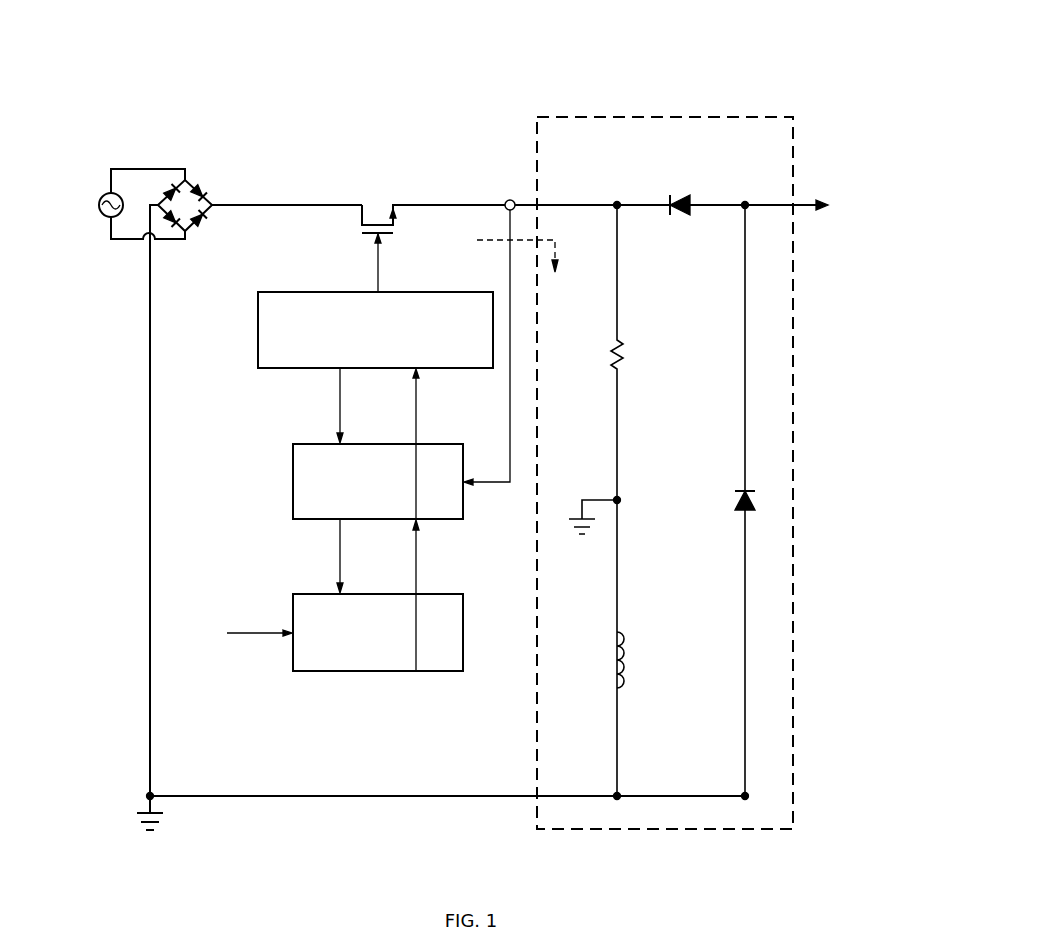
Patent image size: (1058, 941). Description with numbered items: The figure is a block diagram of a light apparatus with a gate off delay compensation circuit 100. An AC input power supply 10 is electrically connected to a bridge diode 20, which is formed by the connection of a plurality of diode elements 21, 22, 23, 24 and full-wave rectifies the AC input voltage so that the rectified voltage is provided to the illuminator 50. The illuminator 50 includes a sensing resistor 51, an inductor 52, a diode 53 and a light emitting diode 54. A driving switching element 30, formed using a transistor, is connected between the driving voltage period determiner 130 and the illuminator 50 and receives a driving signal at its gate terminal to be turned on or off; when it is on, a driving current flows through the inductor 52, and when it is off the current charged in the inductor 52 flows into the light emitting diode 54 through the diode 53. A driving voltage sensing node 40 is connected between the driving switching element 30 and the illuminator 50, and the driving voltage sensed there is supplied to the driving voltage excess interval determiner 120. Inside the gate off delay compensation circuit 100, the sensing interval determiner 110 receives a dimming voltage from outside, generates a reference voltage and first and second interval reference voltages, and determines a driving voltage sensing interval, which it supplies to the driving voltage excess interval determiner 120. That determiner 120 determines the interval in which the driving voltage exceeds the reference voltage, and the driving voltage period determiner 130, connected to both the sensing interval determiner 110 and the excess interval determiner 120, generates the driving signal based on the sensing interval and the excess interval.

The gate off delay compensation circuit 100 is at (494, 28).
The AC input power supply 10 is at (103, 218).
The bridge diode 20 is at (208, 98).
The diode element 21 is at (164, 186).
The diode element 22 is at (206, 186).
The diode element 23 is at (163, 230).
The diode element 24 is at (207, 230).
The driving switching element 30 is at (378, 174).
The driving voltage sensing node 40 is at (510, 199).
The illuminator 50 is at (663, 117).
The sensing resistor 51 is at (605, 350).
The inductor 52 is at (605, 656).
The diode 53 is at (732, 500).
The LED 54 is at (681, 197).
The sensing interval determiner 110 is at (464, 631).
The driving voltage excess interval determiner 120 is at (292, 478).
The driving voltage period determiner 130 is at (258, 327).